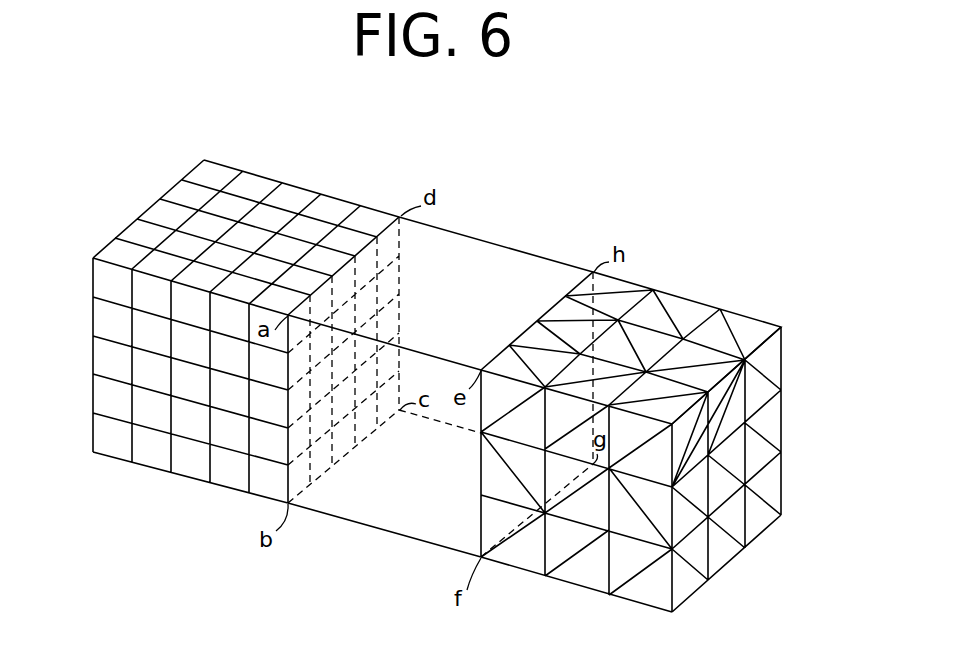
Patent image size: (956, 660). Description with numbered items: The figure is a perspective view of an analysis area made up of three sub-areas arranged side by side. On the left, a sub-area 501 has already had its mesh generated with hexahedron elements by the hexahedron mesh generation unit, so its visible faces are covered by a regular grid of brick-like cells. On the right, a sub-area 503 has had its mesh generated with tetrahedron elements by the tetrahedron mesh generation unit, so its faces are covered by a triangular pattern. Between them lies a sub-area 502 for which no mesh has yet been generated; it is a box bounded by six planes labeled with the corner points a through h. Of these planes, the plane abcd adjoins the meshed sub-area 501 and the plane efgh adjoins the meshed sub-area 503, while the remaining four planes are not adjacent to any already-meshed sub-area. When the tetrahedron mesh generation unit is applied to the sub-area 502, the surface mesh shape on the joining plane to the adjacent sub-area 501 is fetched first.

The sub-area 501 is at (300, 196).
The sub-area 502 is at (493, 243).
The sub-area 503 is at (686, 299).